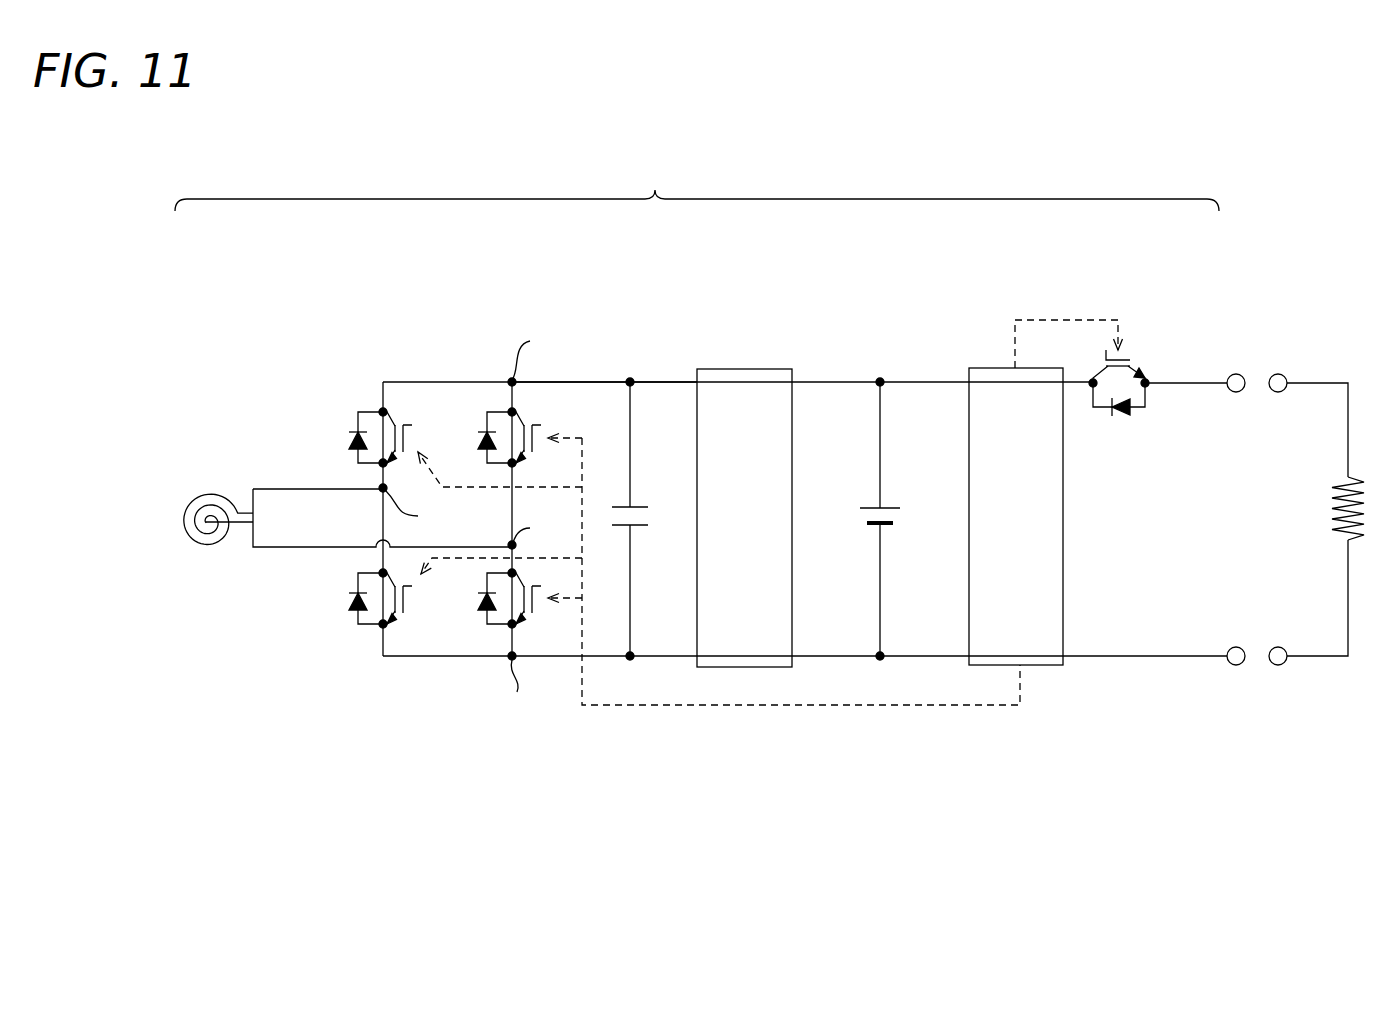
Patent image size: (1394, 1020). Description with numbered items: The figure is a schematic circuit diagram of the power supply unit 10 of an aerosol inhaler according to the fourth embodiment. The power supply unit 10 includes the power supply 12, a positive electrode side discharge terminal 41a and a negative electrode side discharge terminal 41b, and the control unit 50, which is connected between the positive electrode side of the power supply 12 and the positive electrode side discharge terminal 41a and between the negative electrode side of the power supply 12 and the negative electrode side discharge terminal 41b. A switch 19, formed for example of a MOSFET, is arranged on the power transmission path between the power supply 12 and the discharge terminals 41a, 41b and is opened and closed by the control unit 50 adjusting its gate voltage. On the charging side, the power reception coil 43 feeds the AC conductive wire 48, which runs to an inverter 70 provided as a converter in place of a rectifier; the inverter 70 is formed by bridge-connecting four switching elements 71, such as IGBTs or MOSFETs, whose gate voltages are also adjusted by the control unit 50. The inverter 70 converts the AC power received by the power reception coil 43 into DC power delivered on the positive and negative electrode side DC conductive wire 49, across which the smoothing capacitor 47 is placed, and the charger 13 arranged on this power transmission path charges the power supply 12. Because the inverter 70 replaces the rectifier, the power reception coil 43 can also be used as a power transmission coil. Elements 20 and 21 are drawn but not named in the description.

The power supply unit 10 is at (697, 184).
The power supply 12 is at (866, 487).
The charger 13 is at (742, 369).
The switch 19 is at (1153, 358).
The load device 20 is at (1310, 424).
The load resistor 21 is at (1320, 500).
The positive electrode side discharge terminal 41a is at (1245, 374).
The negative electrode side discharge terminal 41b is at (1245, 664).
The power reception coil 43 is at (204, 553).
The smoothing capacitor 47 is at (650, 536).
The AC conductive wire 48 is at (278, 489).
The DC conductive wire 49 is at (655, 380).
The control unit 50 is at (1063, 472).
The inverter 70 is at (663, 561).
The switching element 71 is at (351, 400).